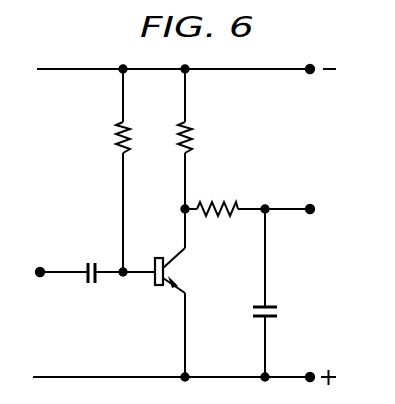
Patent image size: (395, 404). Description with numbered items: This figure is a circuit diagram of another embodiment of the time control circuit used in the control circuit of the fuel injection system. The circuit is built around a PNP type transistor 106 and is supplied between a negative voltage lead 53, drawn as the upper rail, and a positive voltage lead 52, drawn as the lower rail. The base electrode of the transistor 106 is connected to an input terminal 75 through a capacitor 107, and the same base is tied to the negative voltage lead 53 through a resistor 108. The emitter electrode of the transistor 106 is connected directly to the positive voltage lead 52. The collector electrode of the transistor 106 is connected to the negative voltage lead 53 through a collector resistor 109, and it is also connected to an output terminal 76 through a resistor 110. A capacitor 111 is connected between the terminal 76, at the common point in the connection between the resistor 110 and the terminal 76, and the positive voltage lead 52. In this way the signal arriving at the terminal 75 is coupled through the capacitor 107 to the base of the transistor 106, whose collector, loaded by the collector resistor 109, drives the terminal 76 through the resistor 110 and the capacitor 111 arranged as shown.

The positive voltage lead 52 is at (113, 376).
The negative voltage lead 53 is at (238, 72).
The terminal 75 is at (40, 278).
The terminal 76 is at (312, 205).
The PNP type transistor 106 is at (158, 287).
The capacitor 107 is at (101, 250).
The resistor 108 is at (115, 136).
The collector resistor 109 is at (192, 141).
The resistor 110 is at (228, 204).
The capacitor 111 is at (271, 305).